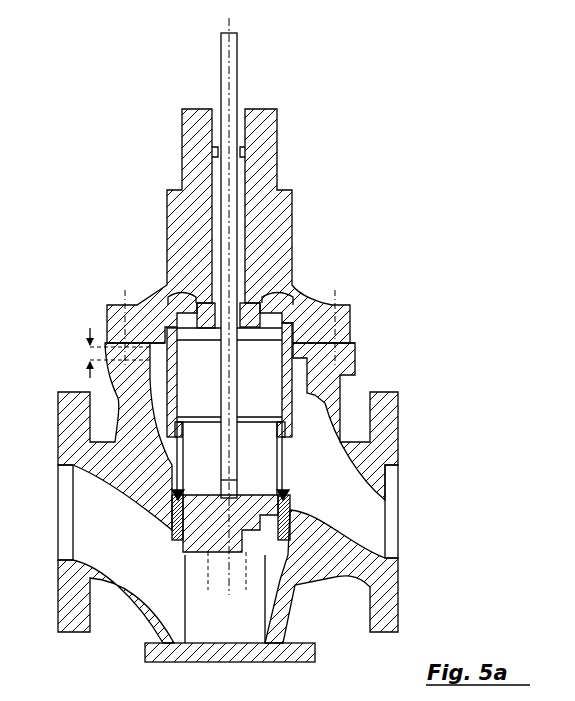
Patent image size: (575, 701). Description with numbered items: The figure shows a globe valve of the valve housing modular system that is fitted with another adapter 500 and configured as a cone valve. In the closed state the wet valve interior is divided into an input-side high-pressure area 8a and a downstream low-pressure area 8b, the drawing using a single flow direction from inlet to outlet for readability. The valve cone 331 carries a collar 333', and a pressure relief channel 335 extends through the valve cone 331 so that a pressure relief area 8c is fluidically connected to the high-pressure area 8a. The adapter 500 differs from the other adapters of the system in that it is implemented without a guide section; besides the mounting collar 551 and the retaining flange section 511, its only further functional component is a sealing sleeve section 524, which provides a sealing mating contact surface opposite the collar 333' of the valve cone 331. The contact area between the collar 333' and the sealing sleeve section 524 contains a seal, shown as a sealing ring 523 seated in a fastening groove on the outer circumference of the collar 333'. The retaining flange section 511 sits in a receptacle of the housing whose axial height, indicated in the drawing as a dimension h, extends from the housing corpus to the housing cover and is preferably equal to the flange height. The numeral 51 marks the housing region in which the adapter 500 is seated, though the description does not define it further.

The mounting collar 551 is at (286, 321).
The retaining flange section 511 is at (328, 342).
The valve body 51 is at (348, 337).
The sealing sleeve section 524 is at (304, 423).
The adapter 500 is at (306, 428).
The sealing ring 523 is at (289, 432).
The collar 333' is at (310, 515).
The valve cone 331 is at (258, 513).
The pressure relief channel 335 is at (213, 493).
The gap height h is at (88, 352).
The high-pressure area 8a is at (135, 553).
The low-pressure area 8b is at (356, 516).
The pressure relief area 8c is at (198, 383).